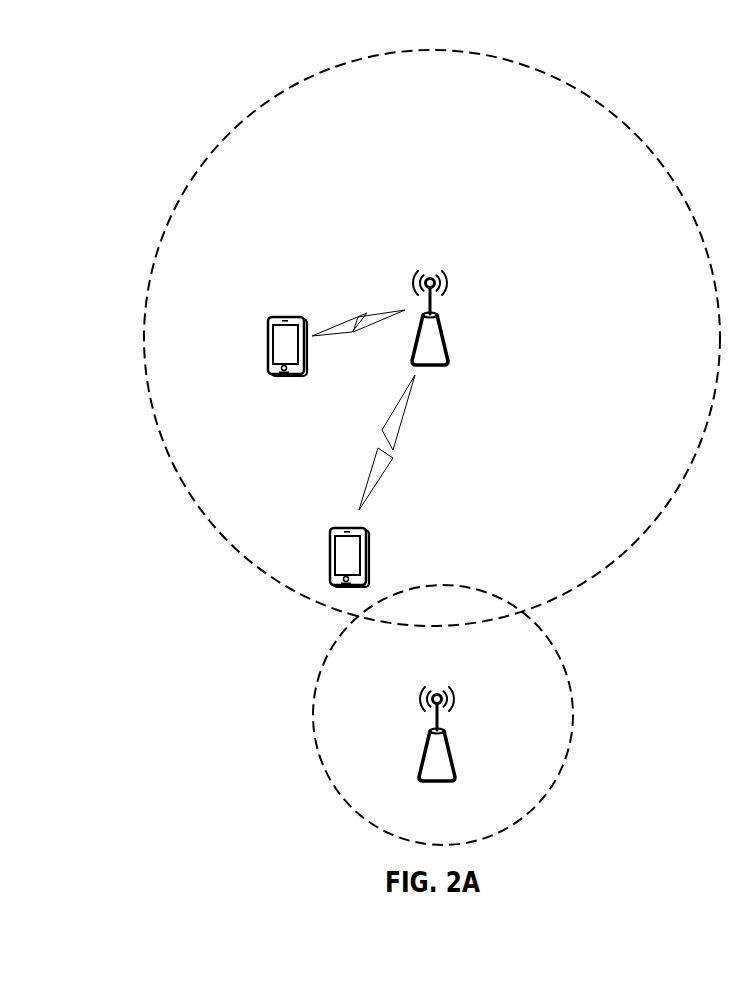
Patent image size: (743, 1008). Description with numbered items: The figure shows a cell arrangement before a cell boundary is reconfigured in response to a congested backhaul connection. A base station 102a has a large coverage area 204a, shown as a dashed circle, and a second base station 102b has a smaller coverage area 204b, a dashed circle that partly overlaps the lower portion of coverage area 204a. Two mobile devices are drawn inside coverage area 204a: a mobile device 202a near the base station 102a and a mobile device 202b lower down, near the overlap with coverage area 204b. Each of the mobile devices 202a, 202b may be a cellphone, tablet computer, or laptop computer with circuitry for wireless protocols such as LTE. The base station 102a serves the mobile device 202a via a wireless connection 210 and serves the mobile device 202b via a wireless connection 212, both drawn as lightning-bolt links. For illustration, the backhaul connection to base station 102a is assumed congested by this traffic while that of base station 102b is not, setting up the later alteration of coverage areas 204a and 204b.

The base station 102a is at (447, 341).
The base station 102b is at (452, 753).
The mobile device 202a is at (295, 375).
The mobile device 202b is at (372, 552).
The coverage area 204a is at (651, 152).
The coverage area 204b is at (572, 733).
The wireless connection 210 is at (351, 317).
The wireless connection 212 is at (377, 450).